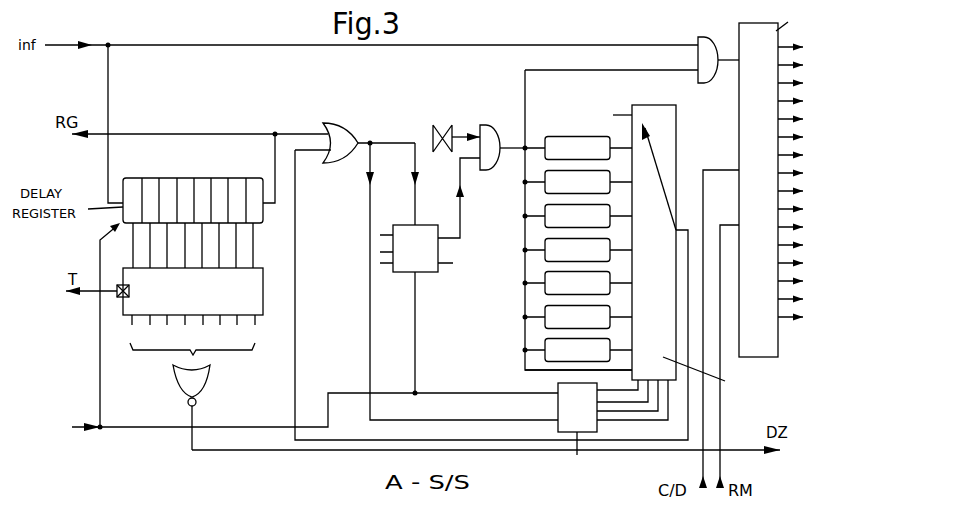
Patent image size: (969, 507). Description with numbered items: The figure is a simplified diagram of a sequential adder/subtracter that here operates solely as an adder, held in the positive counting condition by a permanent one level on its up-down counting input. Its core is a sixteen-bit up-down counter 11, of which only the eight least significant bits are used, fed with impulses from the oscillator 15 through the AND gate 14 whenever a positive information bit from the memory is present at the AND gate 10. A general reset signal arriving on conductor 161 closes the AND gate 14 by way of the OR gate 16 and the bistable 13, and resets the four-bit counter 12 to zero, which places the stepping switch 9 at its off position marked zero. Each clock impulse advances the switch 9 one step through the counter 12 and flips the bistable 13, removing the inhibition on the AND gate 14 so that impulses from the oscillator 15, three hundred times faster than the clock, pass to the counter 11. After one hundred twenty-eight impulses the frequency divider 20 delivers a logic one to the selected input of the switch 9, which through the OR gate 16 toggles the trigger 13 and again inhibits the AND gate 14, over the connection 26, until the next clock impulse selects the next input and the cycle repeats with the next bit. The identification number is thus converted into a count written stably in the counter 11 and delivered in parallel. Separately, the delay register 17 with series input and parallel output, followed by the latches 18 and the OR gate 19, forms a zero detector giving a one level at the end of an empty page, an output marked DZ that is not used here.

The stepping switch 9 is at (667, 103).
The AND gate 10 is at (717, 37).
The 16-bit up-down counter 11 is at (764, 23).
The four-bit counter 12 is at (558, 407).
The bistable 13 is at (416, 224).
The AND gate 14 is at (499, 125).
The oscillator 15 is at (457, 100).
The OR gate 16 is at (351, 125).
The delay register 17 is at (186, 177).
The latches 18 is at (258, 318).
The OR gate 19 is at (205, 385).
The frequency divider 20 is at (588, 136).
The connection line 26 is at (545, 362).
The conductor 161 is at (112, 437).